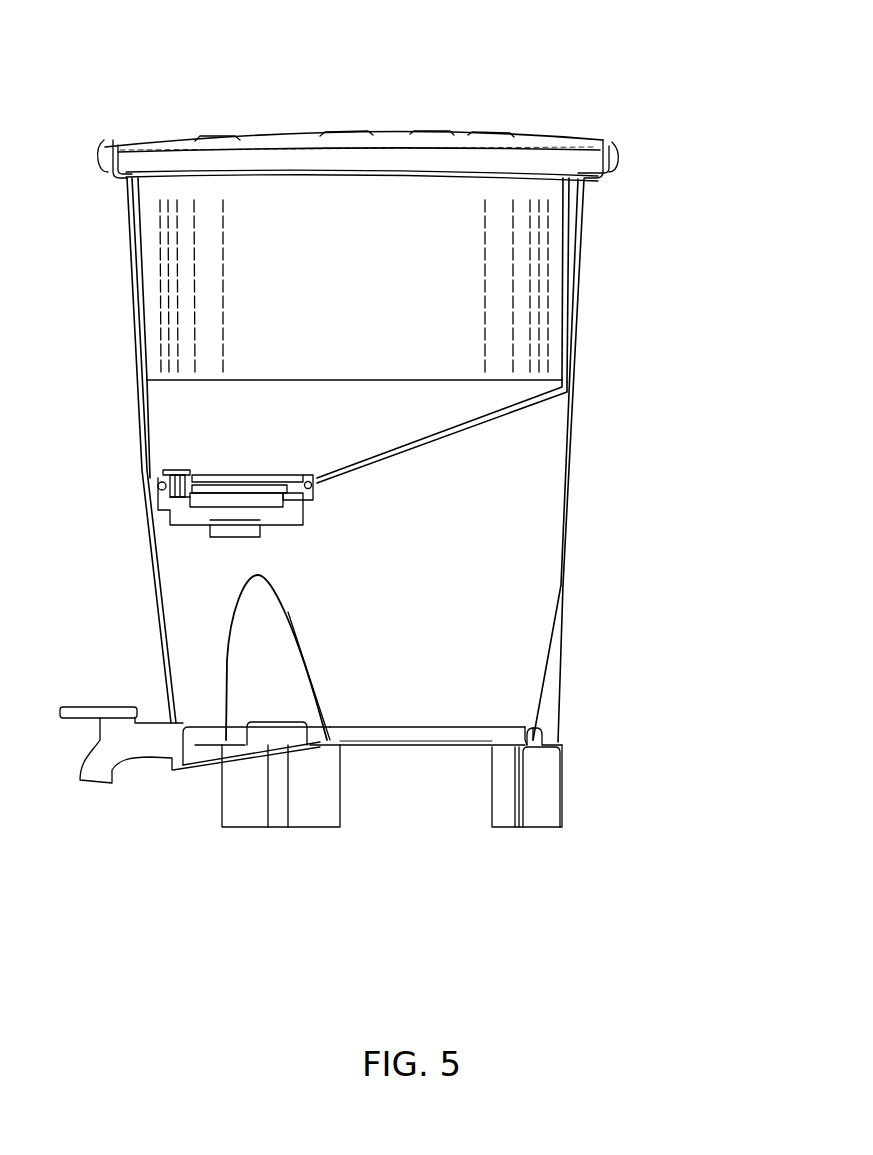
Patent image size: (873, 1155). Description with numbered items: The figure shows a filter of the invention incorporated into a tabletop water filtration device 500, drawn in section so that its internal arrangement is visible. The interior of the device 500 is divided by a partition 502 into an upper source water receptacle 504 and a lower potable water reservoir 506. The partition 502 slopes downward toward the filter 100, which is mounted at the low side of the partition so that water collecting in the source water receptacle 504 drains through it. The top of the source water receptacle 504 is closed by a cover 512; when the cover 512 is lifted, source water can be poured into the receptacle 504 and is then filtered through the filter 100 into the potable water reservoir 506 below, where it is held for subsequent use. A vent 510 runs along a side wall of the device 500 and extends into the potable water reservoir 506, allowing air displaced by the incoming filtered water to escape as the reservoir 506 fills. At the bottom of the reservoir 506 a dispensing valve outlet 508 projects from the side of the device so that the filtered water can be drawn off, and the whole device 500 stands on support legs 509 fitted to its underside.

The tabletop water filtration device 500 is at (676, 127).
The cover 512 is at (414, 131).
The vent 510 is at (579, 222).
The source water receptacle 504 is at (496, 284).
The partition 502 is at (484, 424).
The filter 100 is at (163, 512).
The potable water reservoir 506 is at (478, 557).
The dispensing valve outlet 508 is at (98, 762).
The support legs 509 is at (535, 808).